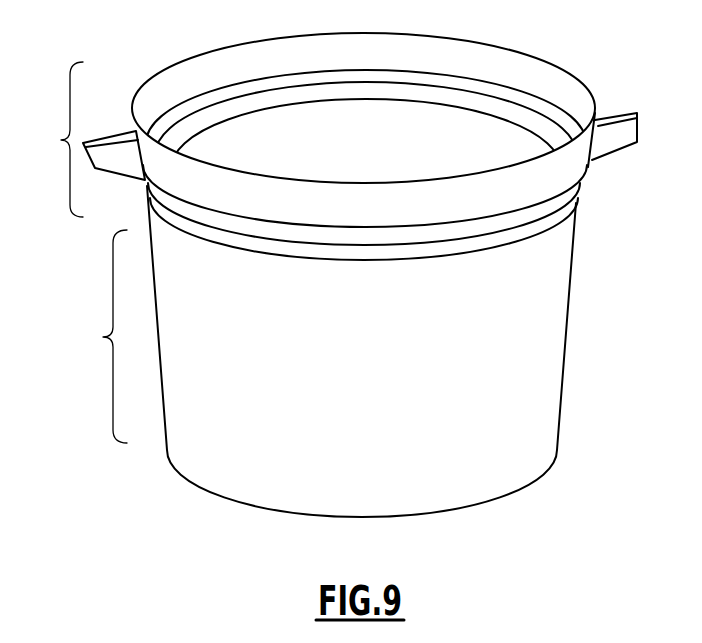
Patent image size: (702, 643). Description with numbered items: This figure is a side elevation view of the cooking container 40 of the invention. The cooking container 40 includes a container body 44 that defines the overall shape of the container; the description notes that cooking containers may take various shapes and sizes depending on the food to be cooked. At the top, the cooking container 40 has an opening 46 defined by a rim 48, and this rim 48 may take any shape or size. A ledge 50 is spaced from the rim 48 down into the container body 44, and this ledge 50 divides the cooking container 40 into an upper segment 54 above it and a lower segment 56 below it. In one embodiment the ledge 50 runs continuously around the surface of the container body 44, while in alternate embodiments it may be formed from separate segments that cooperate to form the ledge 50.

The cooking container 40 is at (353, 268).
The container body 44 is at (560, 397).
The opening 46 is at (224, 74).
The rim 48 is at (596, 101).
The ledge 50 is at (347, 263).
The upper segment 54 is at (51, 139).
The lower segment 56 is at (95, 336).